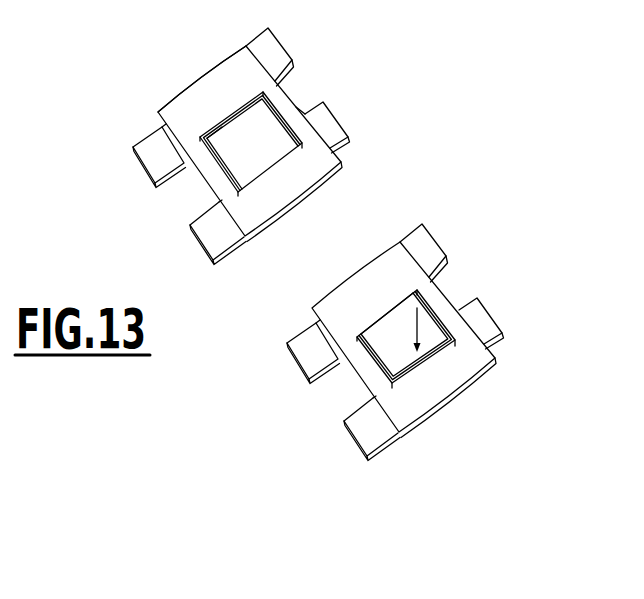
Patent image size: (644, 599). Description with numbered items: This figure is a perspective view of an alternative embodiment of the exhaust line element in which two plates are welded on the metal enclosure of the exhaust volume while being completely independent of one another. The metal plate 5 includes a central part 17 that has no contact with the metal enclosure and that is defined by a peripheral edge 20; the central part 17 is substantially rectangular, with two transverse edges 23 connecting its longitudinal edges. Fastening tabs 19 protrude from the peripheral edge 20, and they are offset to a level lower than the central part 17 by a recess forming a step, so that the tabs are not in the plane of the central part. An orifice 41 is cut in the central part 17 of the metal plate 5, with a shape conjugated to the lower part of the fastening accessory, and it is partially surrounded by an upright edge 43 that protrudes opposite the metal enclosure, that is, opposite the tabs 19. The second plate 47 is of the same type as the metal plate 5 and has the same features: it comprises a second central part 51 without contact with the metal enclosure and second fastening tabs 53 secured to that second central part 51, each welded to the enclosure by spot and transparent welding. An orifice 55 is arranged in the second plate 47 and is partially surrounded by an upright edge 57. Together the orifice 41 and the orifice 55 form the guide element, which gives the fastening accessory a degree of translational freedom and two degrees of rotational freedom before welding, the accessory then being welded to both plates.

The metal plate 5 is at (178, 77).
The central part 17 is at (262, 191).
The fastening tabs 19 is at (288, 57).
The peripheral edge 20 is at (309, 197).
The transverse edges 23 is at (198, 84).
The orifice 41 is at (255, 128).
The upright edge 43 is at (303, 117).
The second plate 47 is at (514, 350).
The second central part 51 is at (360, 300).
The second fastening tabs 53 is at (444, 257).
The orifice 55 is at (382, 335).
The upright edge 57 is at (450, 345).